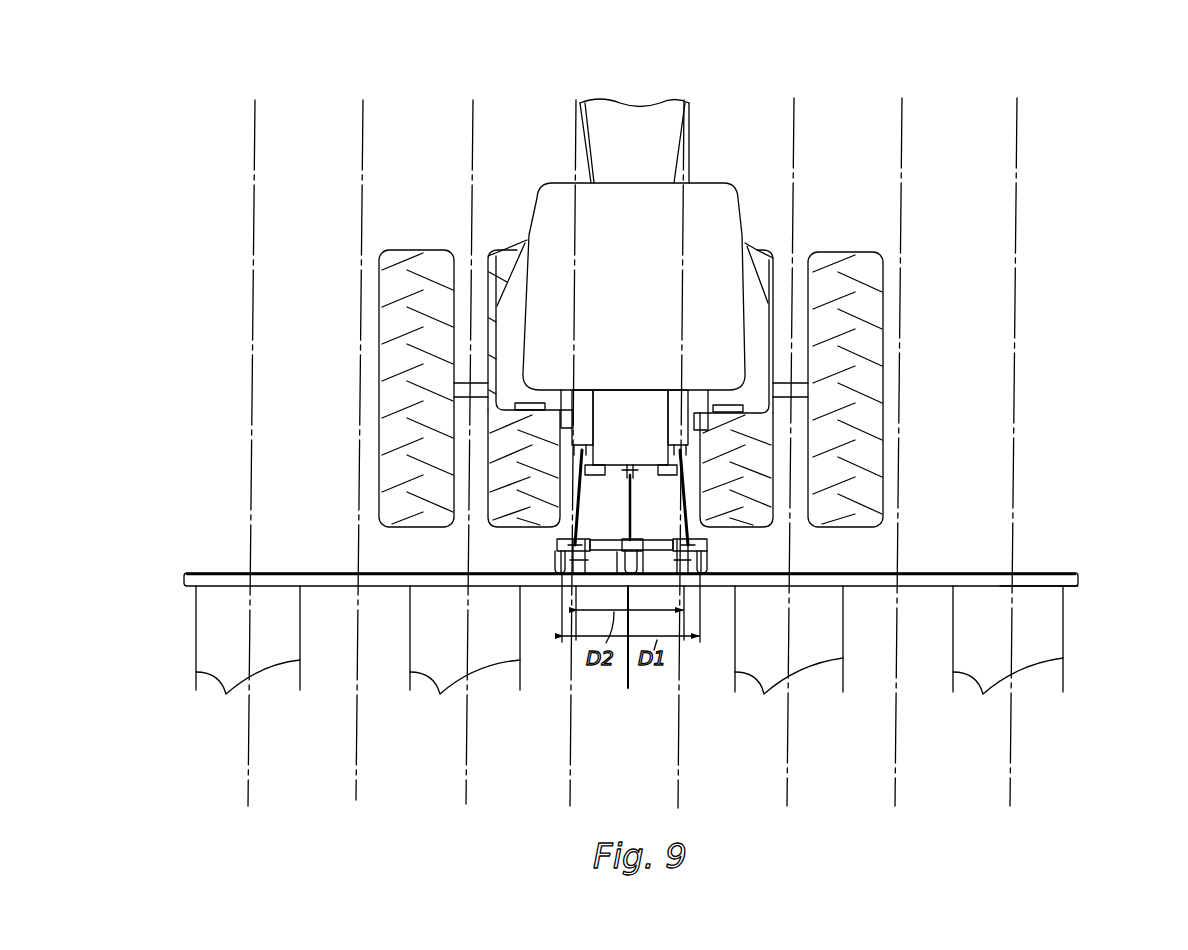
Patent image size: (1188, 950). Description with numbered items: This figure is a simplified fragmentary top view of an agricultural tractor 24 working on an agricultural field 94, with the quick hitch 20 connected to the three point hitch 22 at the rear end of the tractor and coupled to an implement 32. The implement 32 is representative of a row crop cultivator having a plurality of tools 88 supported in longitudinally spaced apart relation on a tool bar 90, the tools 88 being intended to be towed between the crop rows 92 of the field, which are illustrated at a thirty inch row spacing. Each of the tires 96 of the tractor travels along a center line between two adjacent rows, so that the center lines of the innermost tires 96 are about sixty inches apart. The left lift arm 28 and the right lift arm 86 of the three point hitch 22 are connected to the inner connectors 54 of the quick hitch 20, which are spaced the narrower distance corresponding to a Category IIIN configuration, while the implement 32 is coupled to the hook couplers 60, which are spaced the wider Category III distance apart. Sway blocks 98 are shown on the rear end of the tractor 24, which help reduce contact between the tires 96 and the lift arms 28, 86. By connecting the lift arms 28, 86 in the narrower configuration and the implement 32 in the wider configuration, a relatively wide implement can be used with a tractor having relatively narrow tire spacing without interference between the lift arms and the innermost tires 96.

The quick hitch 20 is at (553, 541).
The three point hitch 22 is at (577, 473).
The agricultural tractor 24 is at (679, 100).
The left lift arm 28 is at (525, 523).
The implement 32 is at (1080, 580).
The inner connectors 54 is at (591, 538).
The hook coupler 60 is at (553, 557).
The lift arm 86 is at (703, 518).
The tools 88 is at (628, 680).
The tool bar 90 is at (1052, 573).
The crop rows 92 is at (255, 128).
The agricultural field 94 is at (1066, 74).
The tires 96 is at (412, 250).
The sway blocks 98 is at (598, 465).